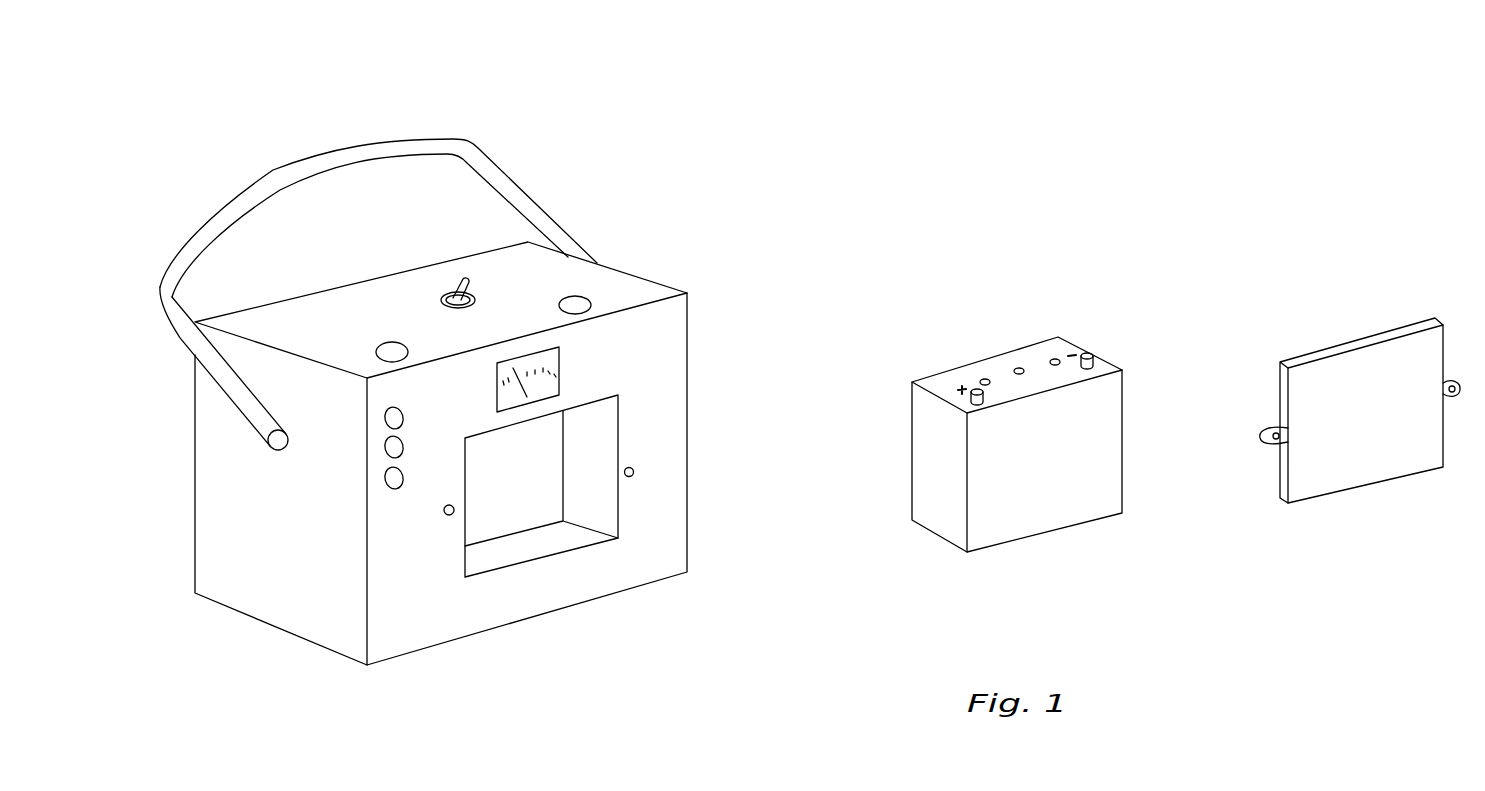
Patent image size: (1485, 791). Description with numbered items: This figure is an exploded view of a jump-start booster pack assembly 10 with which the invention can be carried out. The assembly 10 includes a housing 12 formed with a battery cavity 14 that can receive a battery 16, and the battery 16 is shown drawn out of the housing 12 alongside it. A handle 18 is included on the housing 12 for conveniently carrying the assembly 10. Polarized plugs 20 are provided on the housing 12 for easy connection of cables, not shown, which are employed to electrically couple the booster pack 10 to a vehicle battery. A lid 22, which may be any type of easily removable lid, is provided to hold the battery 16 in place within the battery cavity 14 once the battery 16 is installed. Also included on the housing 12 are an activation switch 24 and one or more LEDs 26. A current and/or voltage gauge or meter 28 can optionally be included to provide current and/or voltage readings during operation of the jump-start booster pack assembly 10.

The jump-start booster pack assembly 10 is at (770, 144).
The housing 12 is at (292, 562).
The battery cavity 14 is at (525, 510).
The battery 16 is at (1090, 468).
The handle 18 is at (262, 193).
The polarized plugs 20 is at (640, 244).
The lid 22 is at (1353, 455).
The activation switch 24 is at (457, 296).
The LED(s) 26 is at (372, 452).
The current and/or voltage gauge or meter 28 is at (576, 360).